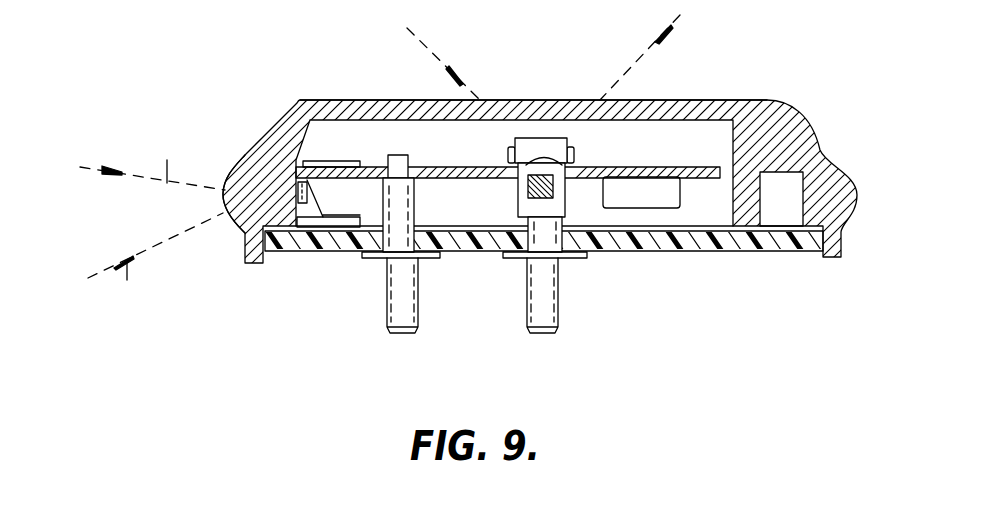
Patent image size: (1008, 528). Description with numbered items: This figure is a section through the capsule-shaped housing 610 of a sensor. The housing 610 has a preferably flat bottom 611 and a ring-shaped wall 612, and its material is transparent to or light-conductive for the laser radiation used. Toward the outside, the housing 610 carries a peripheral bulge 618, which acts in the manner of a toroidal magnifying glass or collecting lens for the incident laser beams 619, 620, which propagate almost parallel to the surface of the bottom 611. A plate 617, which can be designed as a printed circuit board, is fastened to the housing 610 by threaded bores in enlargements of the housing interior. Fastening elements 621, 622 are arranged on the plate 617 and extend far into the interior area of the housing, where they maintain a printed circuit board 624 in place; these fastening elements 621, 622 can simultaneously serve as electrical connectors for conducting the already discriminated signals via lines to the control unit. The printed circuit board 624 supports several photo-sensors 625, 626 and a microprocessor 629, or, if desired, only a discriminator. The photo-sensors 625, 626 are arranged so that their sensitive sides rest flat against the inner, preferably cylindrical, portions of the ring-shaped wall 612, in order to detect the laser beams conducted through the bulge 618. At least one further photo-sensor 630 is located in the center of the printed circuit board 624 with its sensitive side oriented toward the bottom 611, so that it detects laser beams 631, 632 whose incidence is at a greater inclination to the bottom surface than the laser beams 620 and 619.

The capsule-shaped housing 610 is at (531, 195).
The bottom 611 is at (372, 97).
The ring-shaped wall 612 is at (803, 93).
The plate 617 is at (721, 243).
The peripheral bulge 618 is at (241, 168).
The laser beam 619 is at (127, 280).
The laser beam 620 is at (170, 150).
The fastening element 621 is at (543, 310).
The fastening element 622 is at (397, 310).
The printed circuit board 624 is at (689, 165).
The photo-sensor 625 is at (310, 207).
The photo-sensor 626 is at (528, 206).
The microprocessor 629 is at (640, 193).
The further photo-sensor 630 is at (509, 135).
The laser beam 631 is at (418, 42).
The laser beam 632 is at (645, 50).